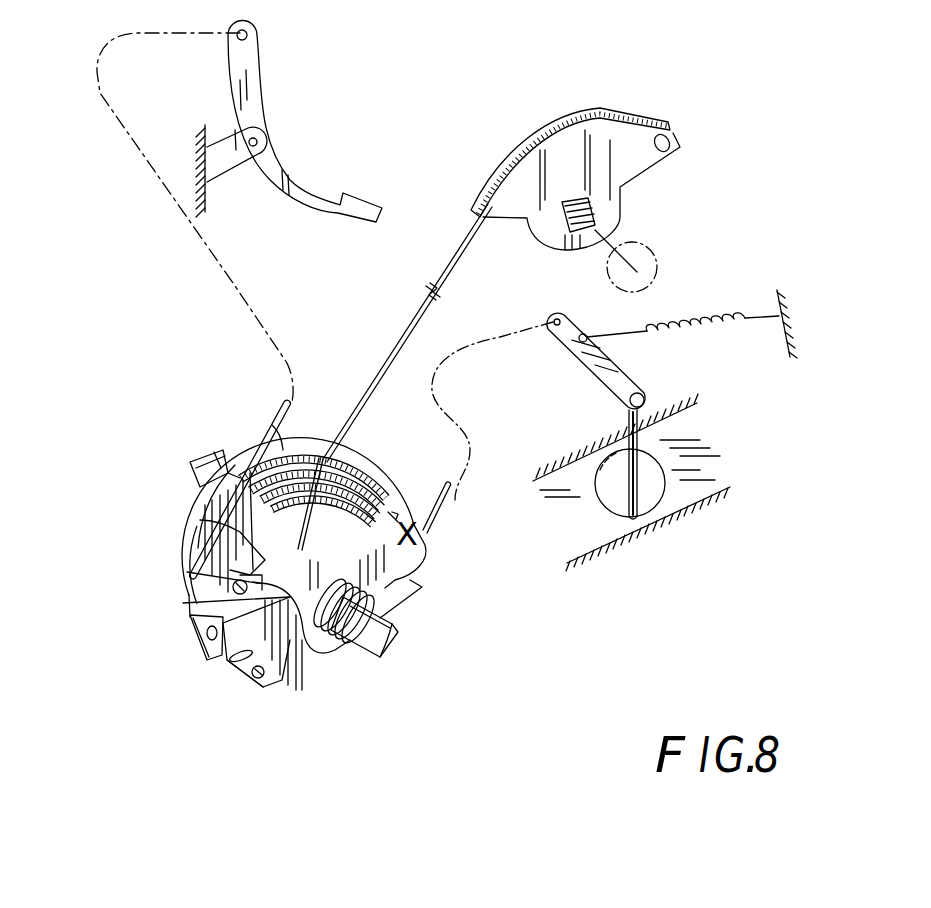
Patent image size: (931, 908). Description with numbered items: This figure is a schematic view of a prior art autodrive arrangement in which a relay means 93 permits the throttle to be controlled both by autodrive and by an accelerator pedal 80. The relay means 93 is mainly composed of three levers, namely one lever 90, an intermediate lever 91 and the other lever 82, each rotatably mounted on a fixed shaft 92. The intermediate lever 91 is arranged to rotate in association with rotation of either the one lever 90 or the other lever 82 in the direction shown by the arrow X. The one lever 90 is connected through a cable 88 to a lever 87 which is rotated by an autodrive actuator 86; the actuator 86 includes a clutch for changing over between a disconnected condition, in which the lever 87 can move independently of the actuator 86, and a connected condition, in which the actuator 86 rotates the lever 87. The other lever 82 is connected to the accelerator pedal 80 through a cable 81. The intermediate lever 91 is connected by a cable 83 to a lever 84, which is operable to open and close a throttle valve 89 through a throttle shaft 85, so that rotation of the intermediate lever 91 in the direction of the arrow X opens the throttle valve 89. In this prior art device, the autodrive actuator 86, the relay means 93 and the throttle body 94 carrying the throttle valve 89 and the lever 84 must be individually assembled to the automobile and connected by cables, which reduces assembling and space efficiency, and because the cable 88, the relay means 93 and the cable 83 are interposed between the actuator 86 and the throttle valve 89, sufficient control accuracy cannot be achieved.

The accelerator pedal 80 is at (303, 200).
The cable 81 is at (237, 305).
The other lever 82 is at (208, 525).
The cable 83 is at (447, 503).
The lever 84 is at (583, 357).
The throttle shaft 85 is at (655, 440).
The autodrive actuator 86 is at (659, 284).
The lever 87 is at (605, 160).
The cable 88 is at (393, 340).
The throttle valve 89 is at (607, 487).
The one lever 90 is at (297, 642).
The intermediate lever 91 is at (275, 668).
The fixed shaft 92 is at (380, 637).
The relay means 93 is at (415, 627).
The throttle body 94 is at (674, 542).